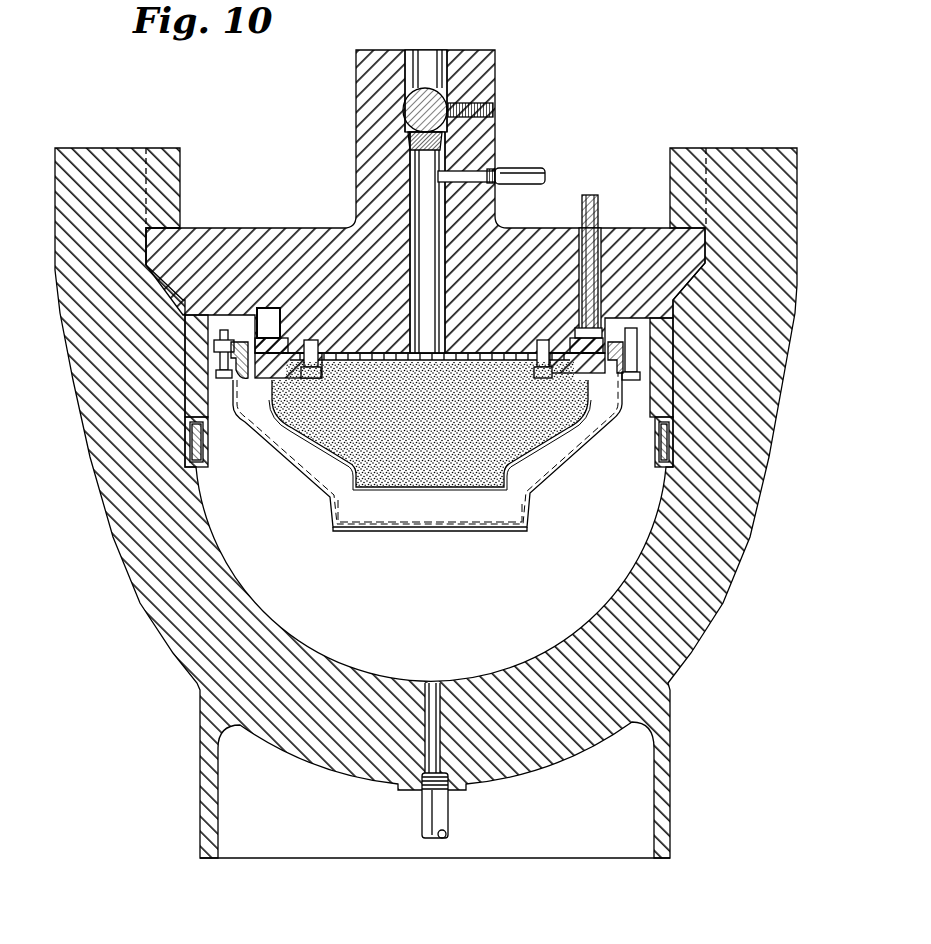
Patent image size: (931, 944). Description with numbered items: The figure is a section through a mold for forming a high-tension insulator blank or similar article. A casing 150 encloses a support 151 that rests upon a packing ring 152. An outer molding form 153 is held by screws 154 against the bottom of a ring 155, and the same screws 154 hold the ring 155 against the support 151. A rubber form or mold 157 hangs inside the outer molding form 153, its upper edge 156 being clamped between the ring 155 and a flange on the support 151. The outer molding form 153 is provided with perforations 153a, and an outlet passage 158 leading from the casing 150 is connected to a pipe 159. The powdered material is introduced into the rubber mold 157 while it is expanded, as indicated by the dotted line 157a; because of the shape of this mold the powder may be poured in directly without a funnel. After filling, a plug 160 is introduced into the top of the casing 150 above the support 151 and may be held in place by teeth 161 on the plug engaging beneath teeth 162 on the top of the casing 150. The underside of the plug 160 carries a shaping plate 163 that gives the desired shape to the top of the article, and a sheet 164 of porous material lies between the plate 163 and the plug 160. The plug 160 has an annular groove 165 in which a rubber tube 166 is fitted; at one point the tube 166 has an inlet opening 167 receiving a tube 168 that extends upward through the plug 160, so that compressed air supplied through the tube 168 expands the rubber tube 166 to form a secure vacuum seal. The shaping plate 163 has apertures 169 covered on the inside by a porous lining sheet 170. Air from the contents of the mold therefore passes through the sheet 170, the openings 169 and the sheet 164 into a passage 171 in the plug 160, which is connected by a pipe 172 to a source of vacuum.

The casing 150 is at (727, 573).
The support 151 is at (651, 405).
The packing ring 152 is at (674, 441).
The outer molding form 153 is at (573, 466).
The perforations 153a is at (333, 532).
The screws 154 is at (223, 380).
The ring 155 is at (244, 383).
The upper edge 156 is at (220, 360).
The rubber form or mold 157 is at (414, 489).
The dotted line 157a is at (338, 511).
The outlet passage 158 is at (433, 750).
The pipe 159 is at (447, 817).
The plug 160 is at (292, 232).
The teeth 161 is at (178, 237).
The teeth 162 is at (182, 176).
The shaping plate 163 is at (334, 356).
The sheet of porous material 164 is at (370, 356).
The annular groove 165 is at (271, 306).
The rubber tube 166 is at (257, 309).
The inlet opening 167 is at (628, 328).
The tube 168 is at (595, 212).
The apertures 169 is at (488, 352).
The porous lining sheet 170 is at (462, 352).
The passage 171 is at (431, 273).
The pipe 172 is at (538, 170).